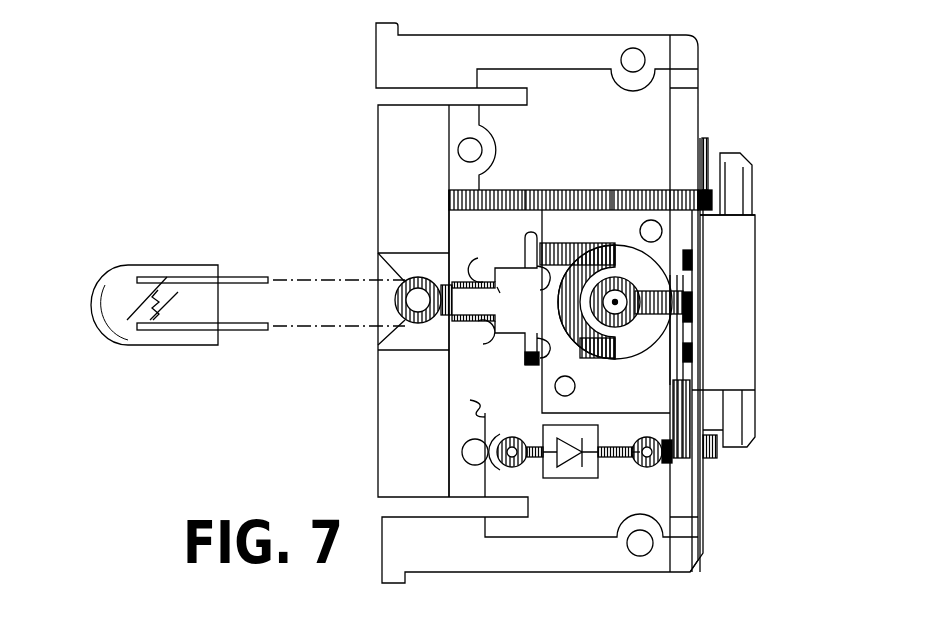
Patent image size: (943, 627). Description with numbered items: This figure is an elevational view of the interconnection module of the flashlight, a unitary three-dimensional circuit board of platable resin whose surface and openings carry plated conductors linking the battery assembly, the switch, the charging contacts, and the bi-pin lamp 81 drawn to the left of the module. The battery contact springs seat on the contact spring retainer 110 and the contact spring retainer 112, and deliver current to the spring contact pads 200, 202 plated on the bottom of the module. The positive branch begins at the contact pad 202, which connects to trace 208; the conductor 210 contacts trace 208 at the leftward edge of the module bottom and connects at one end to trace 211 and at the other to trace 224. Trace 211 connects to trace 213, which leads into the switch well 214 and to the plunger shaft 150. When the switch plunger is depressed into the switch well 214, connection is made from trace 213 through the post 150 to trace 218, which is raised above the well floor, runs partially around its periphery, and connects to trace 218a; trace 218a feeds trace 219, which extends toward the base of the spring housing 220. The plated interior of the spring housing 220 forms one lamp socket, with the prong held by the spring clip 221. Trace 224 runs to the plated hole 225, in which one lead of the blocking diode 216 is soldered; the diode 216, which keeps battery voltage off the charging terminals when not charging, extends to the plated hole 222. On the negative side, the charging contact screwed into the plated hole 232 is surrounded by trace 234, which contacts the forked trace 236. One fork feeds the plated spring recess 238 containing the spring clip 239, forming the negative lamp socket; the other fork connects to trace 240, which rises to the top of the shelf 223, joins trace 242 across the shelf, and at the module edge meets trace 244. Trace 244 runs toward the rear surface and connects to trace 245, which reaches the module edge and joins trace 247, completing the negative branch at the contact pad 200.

The lamp 81 is at (130, 272).
The contact spring retainer 110 is at (693, 260).
The contact spring retainer 112 is at (737, 152).
The plunger shaft 150 is at (640, 323).
The spring contact pad 200 is at (705, 142).
The spring contact pad 202 is at (693, 350).
The trace 208 is at (693, 305).
The conductor 210 is at (687, 408).
The trace 211 is at (658, 278).
The trace 213 is at (648, 337).
The switch well 214 is at (665, 357).
The blocking diode 216 is at (598, 472).
The trace 218 is at (610, 311).
The trace 218a is at (548, 243).
The trace 219 is at (524, 304).
The spring housing 220 is at (515, 257).
The spring clip 221 is at (480, 266).
The plated hole 222 is at (517, 465).
The shelf 223 is at (538, 393).
The trace 224 is at (657, 460).
The plated hole 225 is at (650, 463).
The plated hole 232 is at (410, 312).
The trace 234 is at (410, 290).
The forked trace 236 is at (444, 195).
The spring recess 238 is at (535, 355).
The spring clip 239 is at (452, 365).
The trace 240 is at (470, 190).
The trace 242 is at (533, 186).
The trace 244 is at (614, 188).
The trace 245 is at (665, 175).
The trace 247 is at (700, 217).